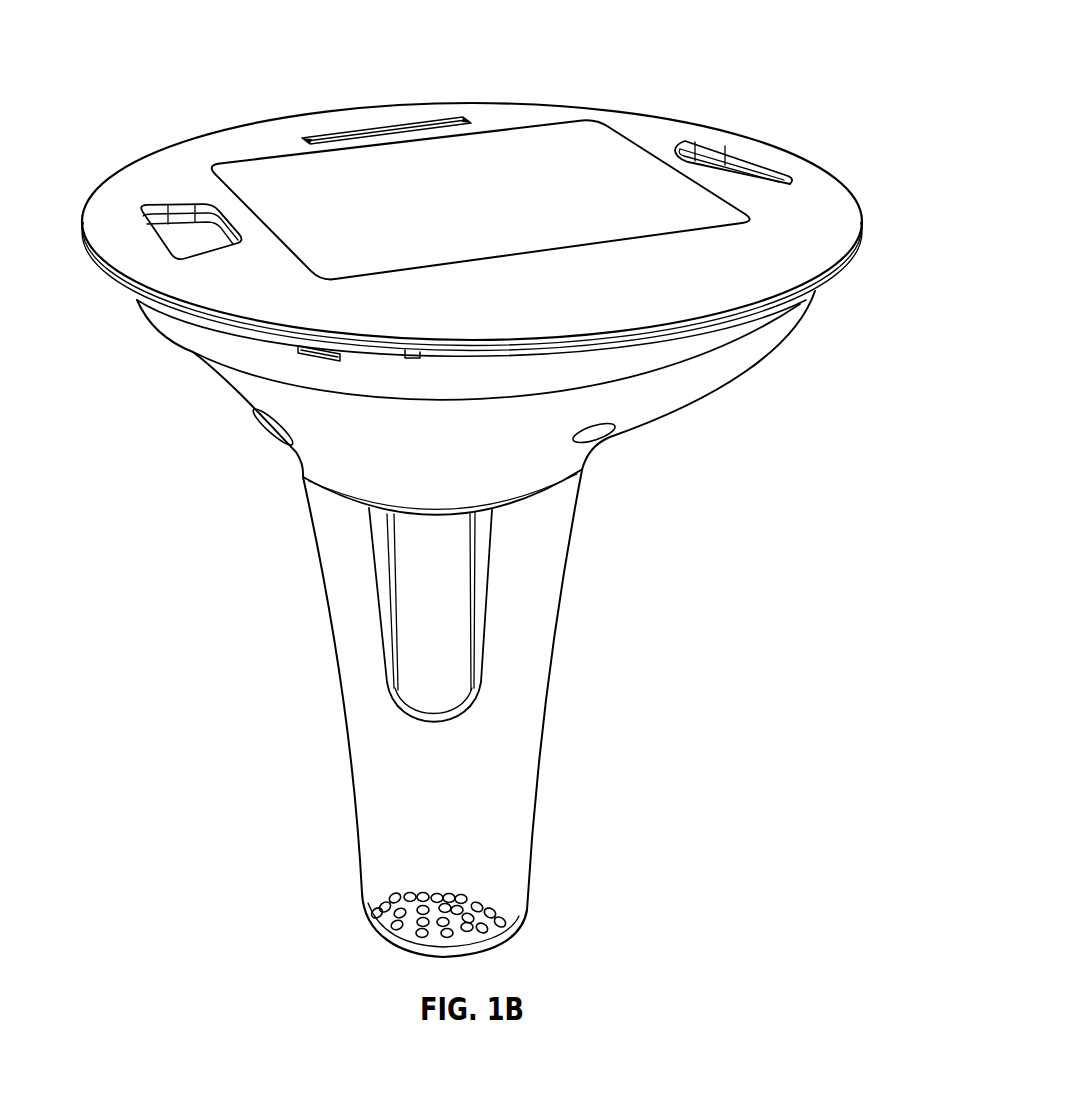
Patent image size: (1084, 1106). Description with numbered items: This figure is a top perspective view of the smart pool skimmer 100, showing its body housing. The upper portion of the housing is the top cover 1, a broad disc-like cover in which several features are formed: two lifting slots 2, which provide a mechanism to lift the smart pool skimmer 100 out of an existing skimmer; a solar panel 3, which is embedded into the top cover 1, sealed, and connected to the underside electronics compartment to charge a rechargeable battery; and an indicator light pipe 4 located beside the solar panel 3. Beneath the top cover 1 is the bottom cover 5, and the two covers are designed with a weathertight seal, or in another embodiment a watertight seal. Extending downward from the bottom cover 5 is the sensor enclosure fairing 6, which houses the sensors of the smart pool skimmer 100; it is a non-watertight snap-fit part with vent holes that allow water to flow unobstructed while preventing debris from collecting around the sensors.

The smart pool skimmer 100 is at (866, 42).
The top cover 1 is at (826, 197).
The lifting slots 2 is at (160, 224).
The solar panel 3 is at (603, 147).
The indicator light pipe 4 is at (430, 122).
The bottom cover 5 is at (683, 415).
The sensor enclosure fairing 6 is at (550, 663).